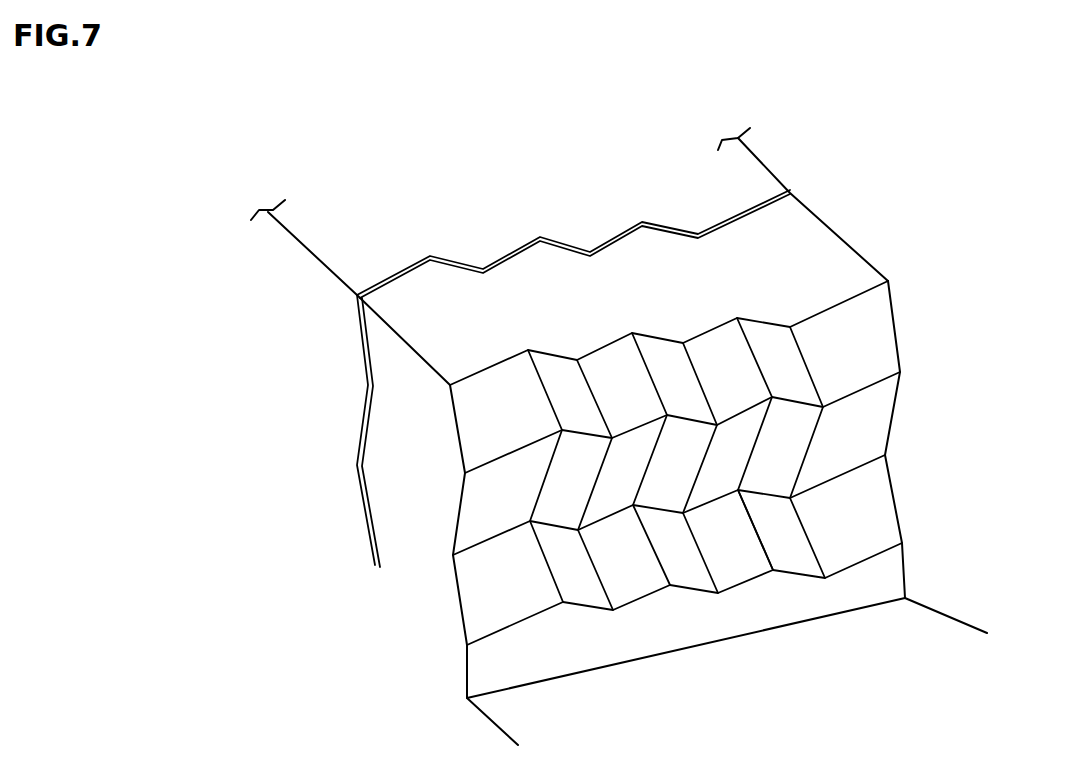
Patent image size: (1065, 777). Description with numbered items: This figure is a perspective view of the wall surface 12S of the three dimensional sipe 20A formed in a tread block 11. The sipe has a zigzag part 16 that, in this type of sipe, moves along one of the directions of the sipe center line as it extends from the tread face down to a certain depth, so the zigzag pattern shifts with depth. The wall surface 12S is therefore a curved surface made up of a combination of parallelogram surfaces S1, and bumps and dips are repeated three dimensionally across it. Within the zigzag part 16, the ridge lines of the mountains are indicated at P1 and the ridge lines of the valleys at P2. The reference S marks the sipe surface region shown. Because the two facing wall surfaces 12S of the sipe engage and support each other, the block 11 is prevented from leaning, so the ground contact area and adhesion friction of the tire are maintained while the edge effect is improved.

The block 11 is at (365, 249).
The zigzag part 16 is at (750, 203).
The corrugated sheet S is at (822, 257).
The parallelogram surface S1 is at (787, 363).
The three dimensional sipe 20A is at (367, 362).
The wall surface 12S is at (480, 596).
The ridge line of mountain P1 is at (808, 537).
The ridge line of valley P2 is at (767, 545).